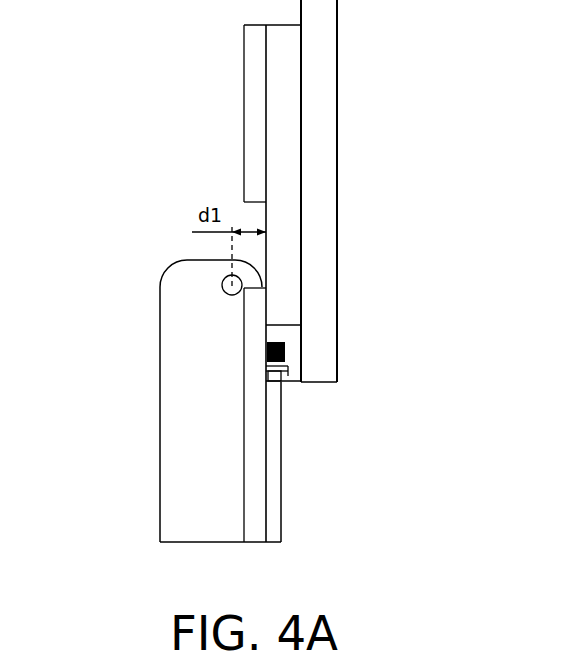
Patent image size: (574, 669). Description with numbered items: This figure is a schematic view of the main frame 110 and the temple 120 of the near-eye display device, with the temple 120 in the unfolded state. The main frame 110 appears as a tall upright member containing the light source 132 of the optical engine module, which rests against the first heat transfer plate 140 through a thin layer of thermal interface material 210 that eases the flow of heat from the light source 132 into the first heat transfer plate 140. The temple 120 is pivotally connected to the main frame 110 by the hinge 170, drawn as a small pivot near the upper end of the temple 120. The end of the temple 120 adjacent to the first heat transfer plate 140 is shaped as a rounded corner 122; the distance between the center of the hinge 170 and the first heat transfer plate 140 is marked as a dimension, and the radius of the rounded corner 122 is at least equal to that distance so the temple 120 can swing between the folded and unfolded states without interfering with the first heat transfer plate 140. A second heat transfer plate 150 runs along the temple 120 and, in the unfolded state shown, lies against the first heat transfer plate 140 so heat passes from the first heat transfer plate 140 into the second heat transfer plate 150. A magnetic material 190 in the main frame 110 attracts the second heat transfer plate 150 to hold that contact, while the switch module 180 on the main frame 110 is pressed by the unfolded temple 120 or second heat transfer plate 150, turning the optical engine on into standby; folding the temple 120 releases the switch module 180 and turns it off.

The main frame 110 is at (323, 96).
The thermal interface material 210 is at (268, 127).
The first heat transfer plate 140 is at (287, 163).
The light source 132 is at (253, 105).
The temple 120 is at (222, 530).
The rounded corner 122 is at (251, 266).
The hinge 170 is at (232, 285).
The magnetic material 190 is at (288, 352).
The switch module 180 is at (290, 374).
The second heat transfer plate 150 is at (256, 453).